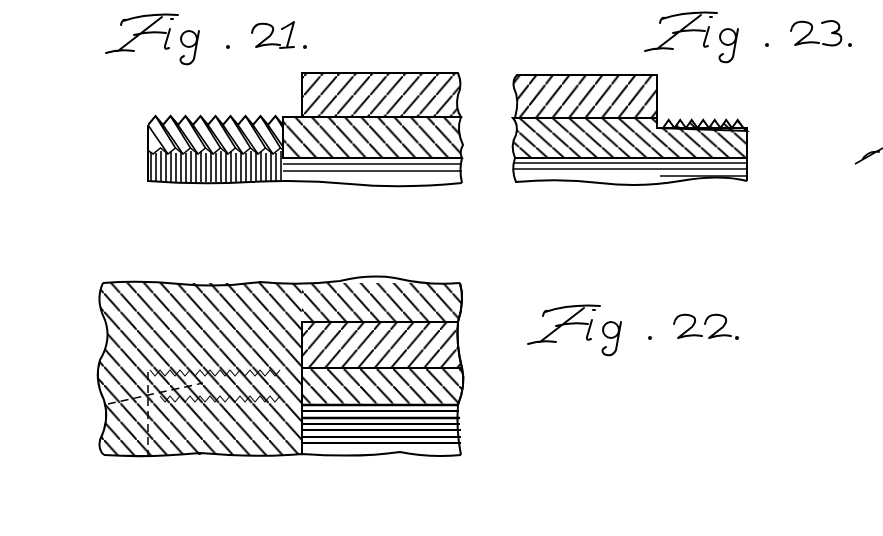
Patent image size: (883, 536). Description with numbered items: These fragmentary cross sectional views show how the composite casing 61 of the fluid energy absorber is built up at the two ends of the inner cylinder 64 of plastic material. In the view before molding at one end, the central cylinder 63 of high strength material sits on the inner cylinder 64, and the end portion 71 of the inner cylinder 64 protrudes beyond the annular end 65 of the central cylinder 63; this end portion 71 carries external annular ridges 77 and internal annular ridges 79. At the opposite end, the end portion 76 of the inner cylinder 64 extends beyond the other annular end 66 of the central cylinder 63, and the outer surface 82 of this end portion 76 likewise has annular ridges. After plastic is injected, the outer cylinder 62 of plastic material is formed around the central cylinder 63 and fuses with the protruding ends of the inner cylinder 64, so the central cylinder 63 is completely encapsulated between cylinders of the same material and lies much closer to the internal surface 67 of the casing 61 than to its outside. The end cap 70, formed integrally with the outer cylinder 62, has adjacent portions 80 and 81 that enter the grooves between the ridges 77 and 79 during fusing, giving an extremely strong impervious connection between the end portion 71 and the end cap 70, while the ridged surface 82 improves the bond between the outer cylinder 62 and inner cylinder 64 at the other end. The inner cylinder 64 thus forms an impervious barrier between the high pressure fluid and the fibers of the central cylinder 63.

In FIG. 22, the casing 61 is at (412, 290).
In FIG. 22, the outer cylinder 62 is at (450, 297).
In FIG. 21, the central cylinder 63 is at (402, 83).
In FIG. 22, the central cylinder 63 is at (445, 343).
In FIG. 23, the central cylinder 63 is at (572, 83).
In FIG. 21, the inner cylinder 64 is at (405, 147).
In FIG. 22, the inner cylinder 64 is at (447, 388).
In FIG. 23, the inner cylinder 64 is at (600, 143).
In FIG. 21, the annular end of central cylinder 65 is at (302, 96).
In FIG. 22, the annular end of central cylinder 65 is at (302, 343).
In FIG. 23, the annular end of central cylinder 66 is at (657, 90).
In FIG. 22, the internal surface of casing 67 is at (407, 408).
In FIG. 22, the end cap 70 is at (112, 367).
In FIG. 21, the end portion of inner cylinder 71 is at (213, 138).
In FIG. 22, the end portion of inner cylinder 71 is at (108, 404).
In FIG. 23, the end portion of inner cylinder 76 is at (698, 160).
In FIG. 21, the external annular ridges 77 is at (177, 115).
In FIG. 21, the internal annular ridges 79 is at (173, 162).
In FIG. 22, the adjacent portion of end cap 80 is at (190, 372).
In FIG. 22, the adjacent portion of end cap 81 is at (246, 402).
In FIG. 23, the outer surface of end portion 82 is at (705, 121).